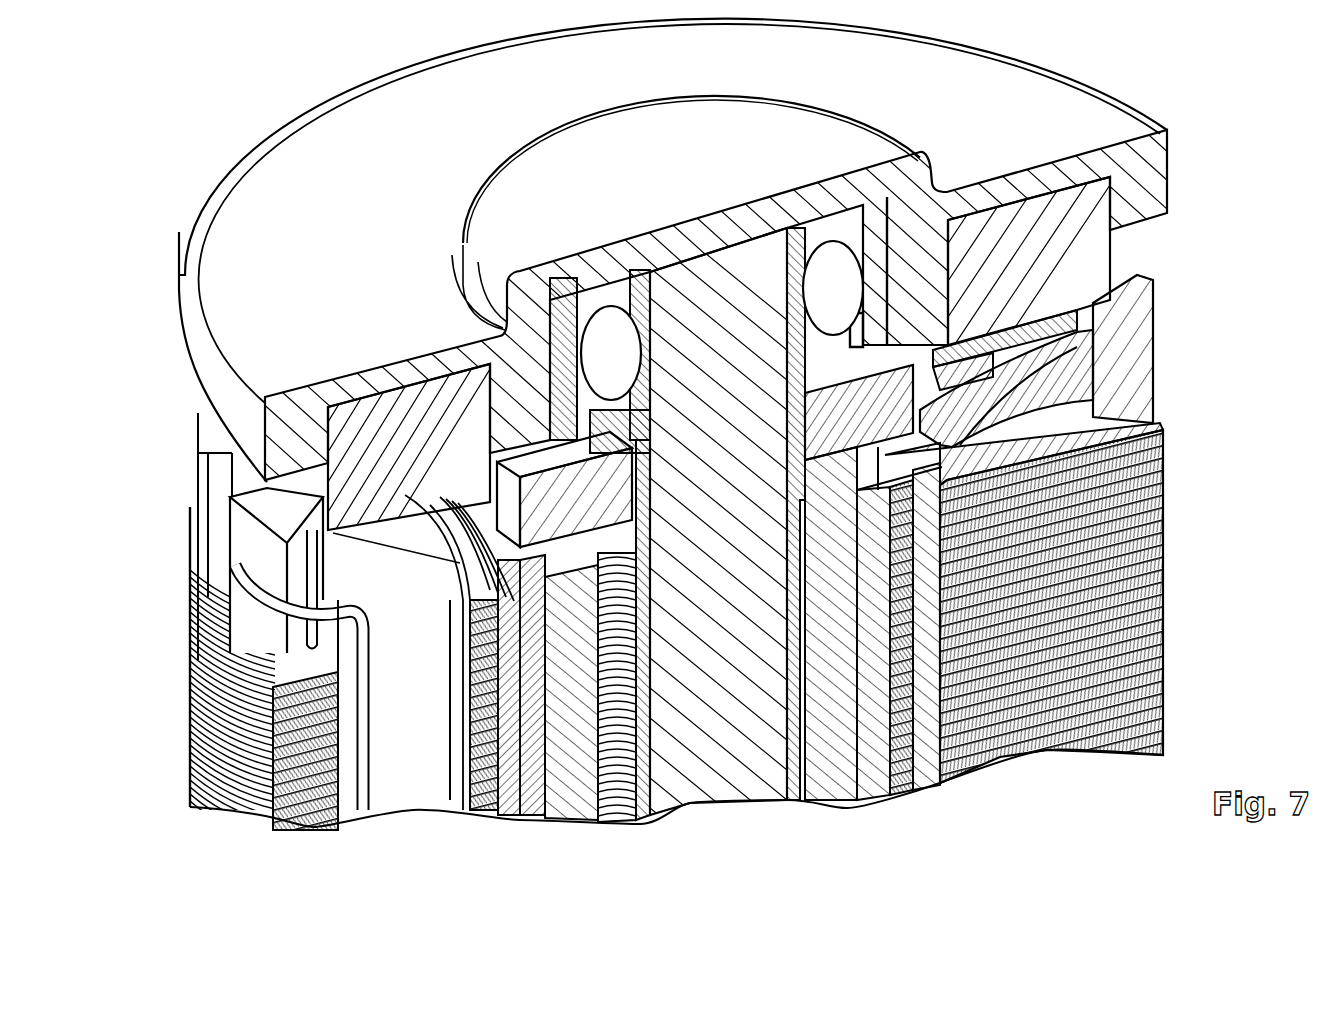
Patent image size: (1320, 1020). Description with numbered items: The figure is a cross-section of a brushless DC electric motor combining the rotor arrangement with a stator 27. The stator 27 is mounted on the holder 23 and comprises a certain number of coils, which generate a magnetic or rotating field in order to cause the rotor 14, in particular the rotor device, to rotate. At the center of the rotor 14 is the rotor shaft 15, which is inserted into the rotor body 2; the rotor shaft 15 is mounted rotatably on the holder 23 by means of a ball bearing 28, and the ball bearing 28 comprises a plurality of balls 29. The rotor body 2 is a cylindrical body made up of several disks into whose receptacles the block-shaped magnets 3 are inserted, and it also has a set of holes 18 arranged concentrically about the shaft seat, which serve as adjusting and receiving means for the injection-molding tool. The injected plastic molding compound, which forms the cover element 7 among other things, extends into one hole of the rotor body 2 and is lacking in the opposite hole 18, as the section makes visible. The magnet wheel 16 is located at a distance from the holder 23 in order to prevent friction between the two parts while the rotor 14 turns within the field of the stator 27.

The rotor body 2 is at (905, 790).
The magnets 3 is at (873, 785).
The cover element 7 is at (1097, 408).
The rotor 14 is at (933, 792).
The rotor shaft 15 is at (705, 270).
The magnet wheel 16 is at (843, 415).
The holes 18 is at (620, 783).
The holder 23 is at (253, 175).
The stator 27 is at (182, 745).
The ball bearing 28 is at (556, 318).
The balls 29 is at (607, 333).